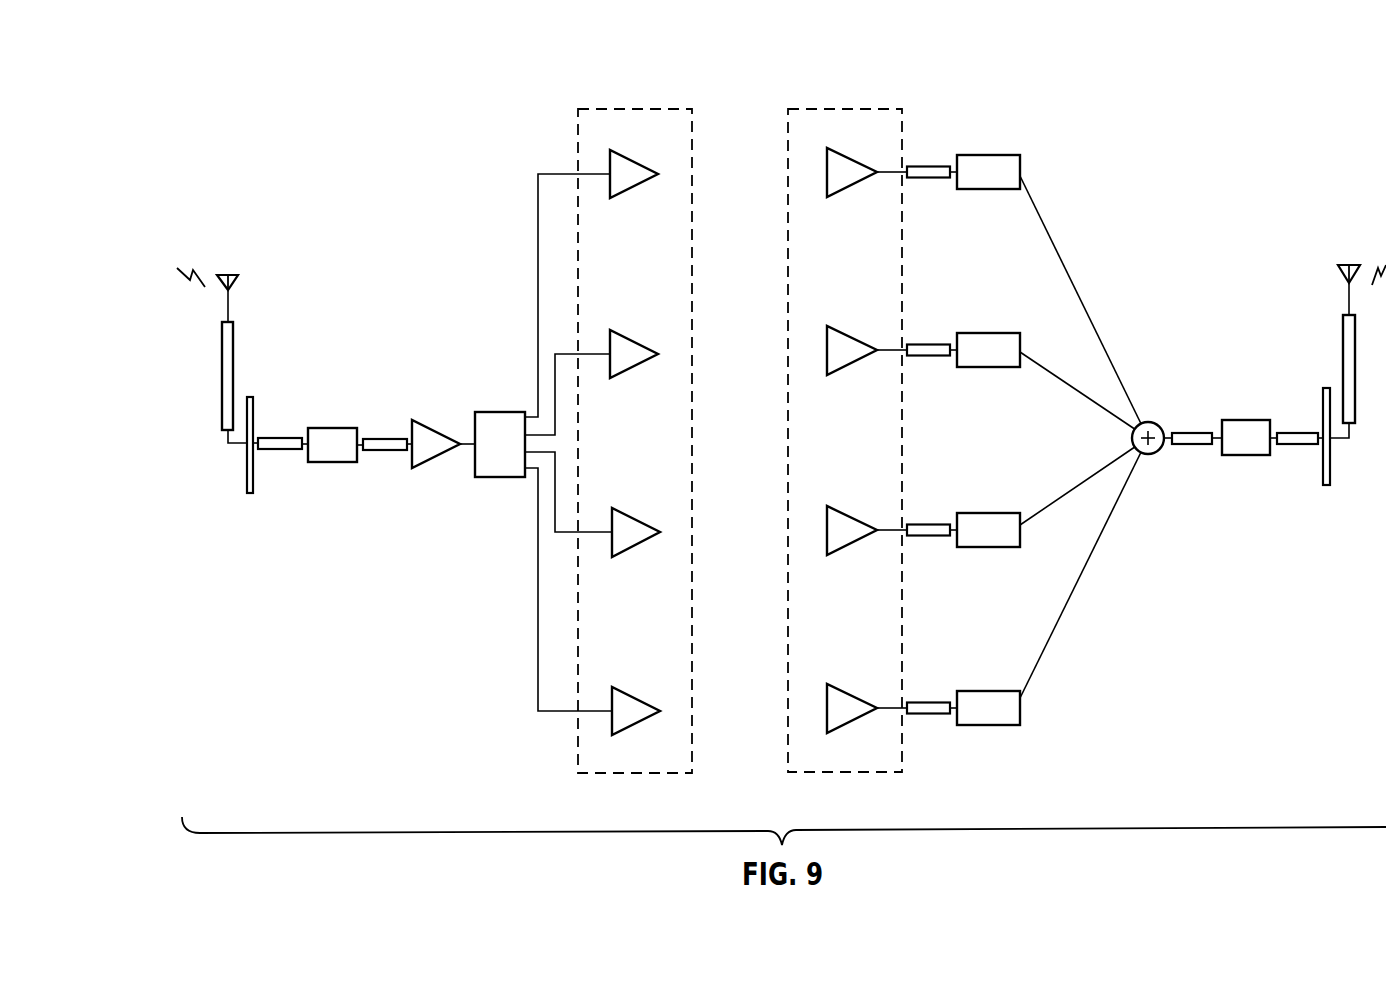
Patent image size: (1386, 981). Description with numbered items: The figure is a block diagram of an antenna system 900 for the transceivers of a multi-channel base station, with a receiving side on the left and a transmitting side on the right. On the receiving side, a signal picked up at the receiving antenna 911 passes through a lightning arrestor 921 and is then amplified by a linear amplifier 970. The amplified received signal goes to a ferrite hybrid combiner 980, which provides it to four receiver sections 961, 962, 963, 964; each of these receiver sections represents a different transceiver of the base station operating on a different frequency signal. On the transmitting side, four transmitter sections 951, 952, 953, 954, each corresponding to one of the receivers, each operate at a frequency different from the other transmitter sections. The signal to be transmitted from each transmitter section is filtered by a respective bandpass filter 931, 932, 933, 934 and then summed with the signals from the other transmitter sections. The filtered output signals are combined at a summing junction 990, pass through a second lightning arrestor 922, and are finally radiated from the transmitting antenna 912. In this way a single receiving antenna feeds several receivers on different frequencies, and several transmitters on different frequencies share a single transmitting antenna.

The antenna system 900 is at (611, 72).
The receiving antenna 911 is at (240, 282).
The transmitting antenna 912 is at (1338, 276).
The lightning arrestor 921 is at (345, 427).
The lightning arrestor 922 is at (1260, 420).
The bandpass filter 931 is at (968, 155).
The bandpass filter 932 is at (968, 333).
The bandpass filter 933 is at (968, 513).
The bandpass filter 934 is at (973, 691).
The transmitter section 951 is at (844, 153).
The transmitter section 952 is at (844, 332).
The transmitter section 953 is at (844, 511).
The transmitter section 954 is at (844, 689).
The receiver section 961 is at (626, 156).
The receiver section 962 is at (626, 336).
The receiver section 963 is at (626, 514).
The receiver section 964 is at (626, 692).
The linear amplifier 970 is at (420, 420).
The ferrite hybrid combiner 980 is at (500, 411).
The summing junction 990 is at (1155, 422).